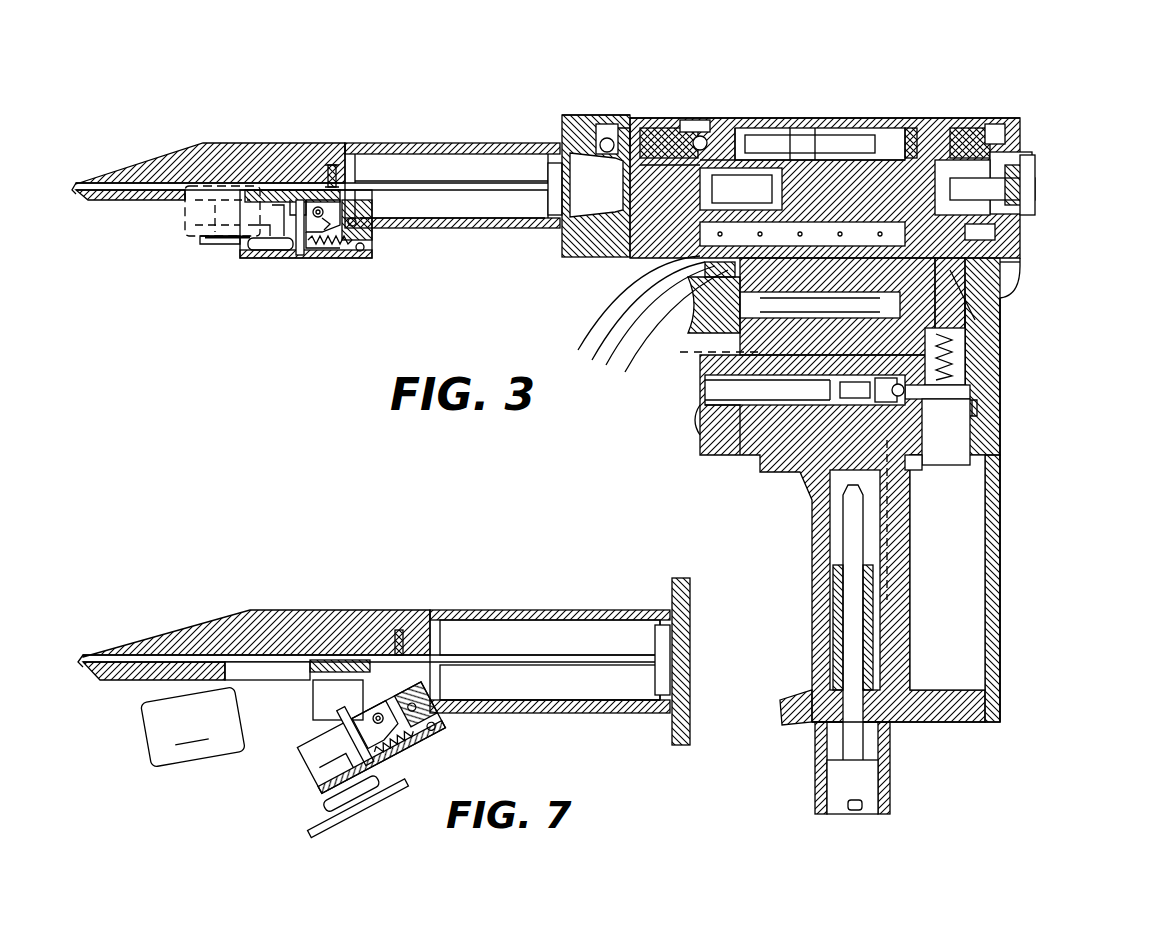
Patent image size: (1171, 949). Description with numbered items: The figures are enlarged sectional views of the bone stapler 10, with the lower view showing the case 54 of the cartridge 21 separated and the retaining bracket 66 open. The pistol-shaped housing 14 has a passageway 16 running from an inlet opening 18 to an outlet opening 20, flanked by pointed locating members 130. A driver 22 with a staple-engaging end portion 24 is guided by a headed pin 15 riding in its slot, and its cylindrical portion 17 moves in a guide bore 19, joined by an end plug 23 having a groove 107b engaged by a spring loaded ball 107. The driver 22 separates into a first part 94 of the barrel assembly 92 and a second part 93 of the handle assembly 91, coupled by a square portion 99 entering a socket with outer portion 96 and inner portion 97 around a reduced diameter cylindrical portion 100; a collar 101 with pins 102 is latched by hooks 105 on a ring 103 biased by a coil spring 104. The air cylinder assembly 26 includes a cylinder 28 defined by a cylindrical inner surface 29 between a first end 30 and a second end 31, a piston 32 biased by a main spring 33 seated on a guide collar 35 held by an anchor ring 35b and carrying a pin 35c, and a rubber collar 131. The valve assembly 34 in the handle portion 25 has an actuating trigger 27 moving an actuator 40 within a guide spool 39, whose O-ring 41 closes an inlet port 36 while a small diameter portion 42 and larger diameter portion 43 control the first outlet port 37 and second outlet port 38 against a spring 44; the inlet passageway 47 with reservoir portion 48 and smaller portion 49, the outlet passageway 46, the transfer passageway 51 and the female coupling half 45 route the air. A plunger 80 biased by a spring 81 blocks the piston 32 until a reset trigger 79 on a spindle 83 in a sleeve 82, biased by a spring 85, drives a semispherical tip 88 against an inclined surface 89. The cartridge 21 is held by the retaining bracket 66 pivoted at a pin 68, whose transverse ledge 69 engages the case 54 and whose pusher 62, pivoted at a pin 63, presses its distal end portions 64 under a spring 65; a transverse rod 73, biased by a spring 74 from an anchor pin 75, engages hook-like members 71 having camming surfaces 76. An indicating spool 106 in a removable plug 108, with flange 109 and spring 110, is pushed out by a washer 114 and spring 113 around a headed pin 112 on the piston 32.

In FIG. 3, the stapler 10 is at (1020, 116).
In FIG. 3, the housing 14 is at (470, 144).
In FIG. 7, the housing 14 is at (598, 610).
In FIG. 3, the headed pin 15 is at (333, 165).
In FIG. 7, the headed pin 15 is at (400, 630).
In FIG. 3, the passageway 16 is at (150, 183).
In FIG. 7, the passageway 16 is at (190, 655).
In FIG. 3, the cylindrical portion 17 is at (648, 166).
In FIG. 3, the inlet opening 18 is at (208, 183).
In FIG. 7, the inlet opening 18 is at (264, 680).
In FIG. 3, the guide bore 19 is at (442, 228).
In FIG. 7, the guide bore 19 is at (536, 710).
In FIG. 3, the outlet opening 20 is at (100, 183).
In FIG. 7, the outlet opening 20 is at (102, 655).
In FIG. 3, the cartridge 21 is at (170, 228).
In FIG. 7, the cartridge 21 is at (150, 752).
In FIG. 3, the driver 22 is at (438, 181).
In FIG. 7, the driver 22 is at (496, 660).
In FIG. 3, the end plug 23 is at (572, 152).
In FIG. 7, the end plug 23 is at (690, 660).
In FIG. 3, the end portion 24 is at (266, 190).
In FIG. 7, the end portion 24 is at (330, 660).
In FIG. 3, the handle portion 25 is at (1002, 506).
In FIG. 3, the air cylinder assembly 26 is at (872, 118).
In FIG. 3, the actuating trigger 27 is at (718, 382).
In FIG. 3, the cylinder 28 is at (790, 128).
In FIG. 3, the cylindrical inner surface 29 is at (818, 126).
In FIG. 3, the first end 30 is at (986, 124).
In FIG. 3, the second end 31 is at (738, 128).
In FIG. 3, the piston 32 is at (956, 128).
In FIG. 3, the main spring 33 is at (856, 152).
In FIG. 3, the valve assembly 34 is at (768, 440).
In FIG. 3, the guide collar 35 is at (596, 284).
In FIG. 3, the anchor ring 35b is at (704, 136).
In FIG. 3, the pin 35c is at (612, 124).
In FIG. 3, the inlet port 36 is at (914, 470).
In FIG. 3, the first outlet port 37 is at (924, 406).
In FIG. 3, the second outlet port 38 is at (792, 456).
In FIG. 3, the guide spool 39 is at (740, 440).
In FIG. 3, the actuator 40 is at (740, 410).
In FIG. 3, the O-ring 41 is at (972, 385).
In FIG. 3, the small diameter portion 42 is at (832, 462).
In FIG. 3, the larger diameter portion 43 is at (716, 424).
In FIG. 3, the spring 44 is at (979, 408).
In FIG. 3, the female coupling half 45 is at (882, 782).
In FIG. 3, the outlet passageway 46 is at (700, 352).
In FIG. 3, the inlet passageway 47 is at (856, 812).
In FIG. 3, the reservoir portion 48 is at (982, 598).
In FIG. 3, the smaller portion 49 is at (896, 600).
In FIG. 3, the transfer passageway 51 is at (1002, 268).
In FIG. 7, the case 54 is at (192, 727).
In FIG. 3, the pusher 62 is at (268, 248).
In FIG. 7, the pusher 62 is at (324, 786).
In FIG. 3, the pin 63 is at (342, 210).
In FIG. 7, the pin 63 is at (394, 754).
In FIG. 3, the distal end portions 64 is at (232, 246).
In FIG. 7, the distal end portions 64 is at (284, 758).
In FIG. 3, the spring 65 is at (292, 200).
In FIG. 7, the spring 65 is at (378, 764).
In FIG. 3, the retaining bracket 66 is at (350, 250).
In FIG. 7, the retaining bracket 66 is at (404, 768).
In FIG. 3, the pin 68 is at (366, 246).
In FIG. 7, the pin 68 is at (446, 696).
In FIG. 3, the transverse ledge 69 is at (214, 244).
In FIG. 7, the transverse ledge 69 is at (280, 802).
In FIG. 3, the hook-like members 71 is at (301, 256).
In FIG. 7, the hook-like members 71 is at (313, 712).
In FIG. 3, the transverse rod 73 is at (292, 246).
In FIG. 7, the transverse rod 73 is at (348, 782).
In FIG. 3, the spring 74 is at (332, 250).
In FIG. 7, the spring 74 is at (426, 748).
In FIG. 3, the anchor pin 75 is at (364, 251).
In FIG. 7, the anchor pin 75 is at (446, 726).
In FIG. 3, the camming surfaces 76 is at (300, 256).
In FIG. 3, the reset trigger 79 is at (690, 288).
In FIG. 3, the plunger 80 is at (1004, 286).
In FIG. 3, the spring 81 is at (966, 362).
In FIG. 3, the sleeve 82 is at (705, 258).
In FIG. 3, the spindle 83 is at (714, 306).
In FIG. 3, the spring 85 is at (848, 300).
In FIG. 3, the semispherical tip 88 is at (936, 300).
In FIG. 3, the inclined surface 89 is at (980, 296).
In FIG. 3, the handle assembly 91 is at (1002, 646).
In FIG. 3, the barrel assembly 92 is at (504, 230).
In FIG. 7, the barrel assembly 92 is at (592, 716).
In FIG. 3, the second part 93 is at (806, 210).
In FIG. 3, the first part 94 is at (574, 258).
In FIG. 7, the first part 94 is at (664, 708).
In FIG. 3, the outer portion 96 is at (642, 128).
In FIG. 3, the inner portion 97 is at (770, 155).
In FIG. 3, the square portion 99 is at (712, 200).
In FIG. 3, the reduced diameter cylindrical portion 100 is at (622, 194).
In FIG. 3, the collar 101 is at (604, 322).
In FIG. 3, the pins 102 is at (632, 330).
In FIG. 3, the ring 103 is at (696, 120).
In FIG. 3, the coil spring 104 is at (744, 203).
In FIG. 3, the hooks 105 is at (634, 342).
In FIG. 3, the indicating spool 106 is at (1040, 186).
In FIG. 3, the spring loaded ball 107 is at (576, 146).
In FIG. 3, the groove 107b is at (548, 172).
In FIG. 7, the groove 107b is at (656, 648).
In FIG. 3, the removable plug 108 is at (1030, 154).
In FIG. 3, the flange 109 is at (1040, 200).
In FIG. 3, the spring 110 is at (1010, 226).
In FIG. 3, the headed pin 112 is at (1046, 176).
In FIG. 3, the spring 113 is at (1012, 238).
In FIG. 3, the washer 114 is at (1028, 166).
In FIG. 3, the locating members 130 is at (76, 186).
In FIG. 7, the locating members 130 is at (84, 658).
In FIG. 3, the rubber collar 131 is at (912, 128).